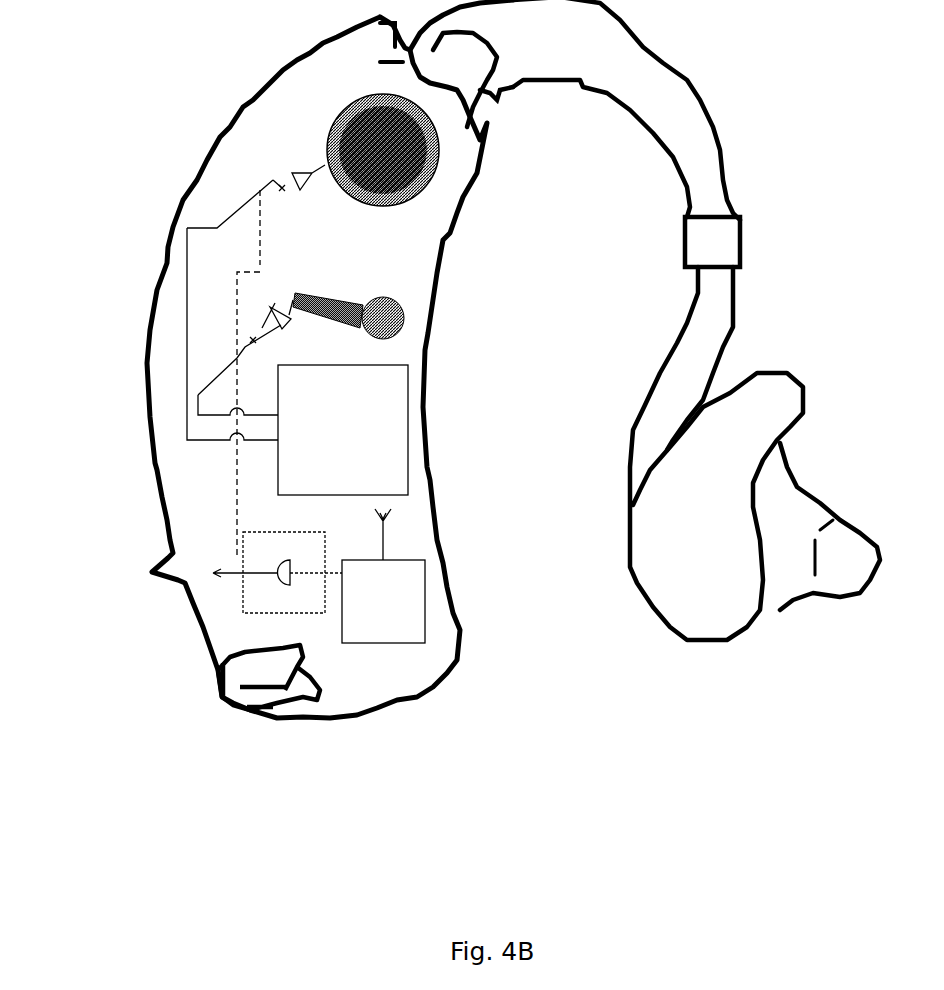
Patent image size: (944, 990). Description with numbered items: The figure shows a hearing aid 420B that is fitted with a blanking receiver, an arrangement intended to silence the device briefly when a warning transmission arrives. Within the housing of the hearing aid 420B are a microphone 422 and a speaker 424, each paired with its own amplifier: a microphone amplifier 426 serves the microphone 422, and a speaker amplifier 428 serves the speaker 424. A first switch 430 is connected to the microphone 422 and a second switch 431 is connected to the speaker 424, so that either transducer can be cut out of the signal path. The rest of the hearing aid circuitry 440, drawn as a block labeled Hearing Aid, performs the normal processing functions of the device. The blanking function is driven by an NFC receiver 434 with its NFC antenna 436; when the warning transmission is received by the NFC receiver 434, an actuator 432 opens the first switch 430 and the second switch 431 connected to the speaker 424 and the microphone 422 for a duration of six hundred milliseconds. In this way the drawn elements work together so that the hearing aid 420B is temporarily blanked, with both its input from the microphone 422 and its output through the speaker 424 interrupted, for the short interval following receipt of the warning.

The hearing aid 420B is at (420, 700).
The microphone 422 is at (400, 337).
The speaker 424 is at (420, 210).
The microphone amplifier 426 is at (242, 343).
The speaker amplifier 428 is at (290, 173).
The first switch 430 is at (237, 347).
The second switch 431 is at (263, 192).
The actuator 432 is at (247, 593).
The NFC receiver 434 is at (418, 623).
The NFC antenna 436 is at (388, 527).
The hearing aid circuitry 440 is at (388, 407).